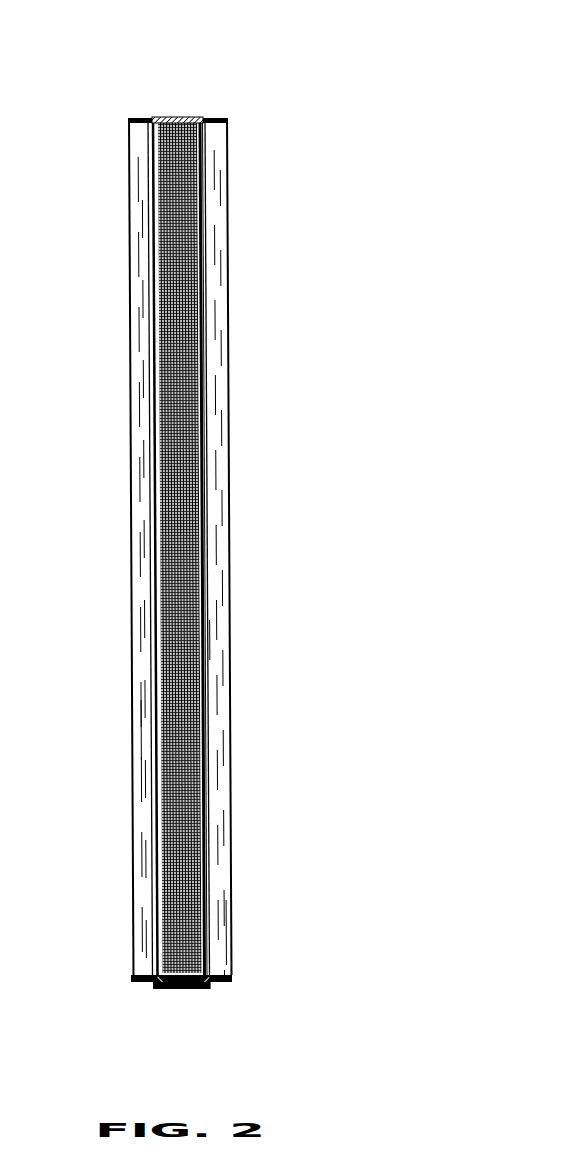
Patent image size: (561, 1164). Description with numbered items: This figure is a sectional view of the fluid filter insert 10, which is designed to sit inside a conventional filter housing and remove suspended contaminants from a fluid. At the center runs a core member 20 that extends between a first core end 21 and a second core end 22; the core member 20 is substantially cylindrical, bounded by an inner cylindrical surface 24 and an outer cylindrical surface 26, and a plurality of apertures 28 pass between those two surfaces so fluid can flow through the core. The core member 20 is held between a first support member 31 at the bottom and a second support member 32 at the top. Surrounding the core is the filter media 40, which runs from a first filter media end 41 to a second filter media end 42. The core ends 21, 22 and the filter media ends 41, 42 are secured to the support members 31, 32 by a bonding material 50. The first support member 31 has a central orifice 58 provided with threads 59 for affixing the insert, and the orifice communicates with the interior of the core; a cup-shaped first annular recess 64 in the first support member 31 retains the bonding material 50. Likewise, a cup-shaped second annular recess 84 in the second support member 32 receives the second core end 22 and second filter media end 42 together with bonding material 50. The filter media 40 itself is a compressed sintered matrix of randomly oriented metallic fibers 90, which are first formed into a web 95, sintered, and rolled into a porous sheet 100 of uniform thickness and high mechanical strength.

The fluid filter insert 10 is at (313, 44).
The core member 20 is at (207, 642).
The first core end 21 is at (222, 960).
The second core end 22 is at (202, 148).
The inner cylindrical surface 24 is at (201, 524).
The outer cylindrical surface 26 is at (207, 445).
The apertures 28 is at (193, 595).
The first support member 31 is at (230, 978).
The second support member 32 is at (227, 119).
The filter media 40 is at (132, 603).
The first filter media end 41 is at (147, 953).
The second filter media end 42 is at (138, 150).
The bonding material 50 is at (127, 119).
The central orifice 58 is at (175, 990).
The threads 59 is at (193, 989).
The first annular recess 64 is at (142, 980).
The second annular recess 84 is at (208, 117).
The metallic fibers 90 is at (138, 732).
The web 95 is at (217, 705).
The sheet 100 is at (222, 767).